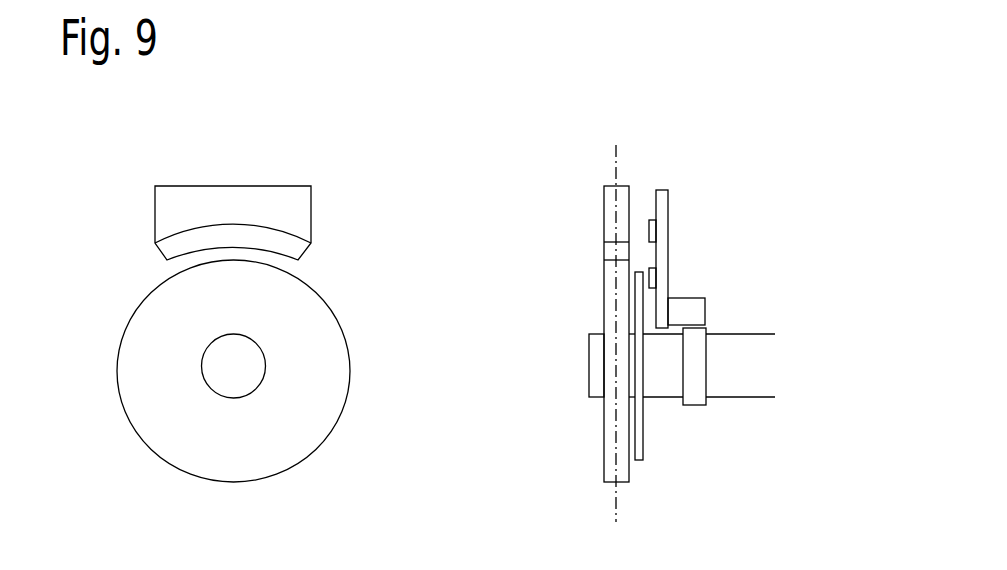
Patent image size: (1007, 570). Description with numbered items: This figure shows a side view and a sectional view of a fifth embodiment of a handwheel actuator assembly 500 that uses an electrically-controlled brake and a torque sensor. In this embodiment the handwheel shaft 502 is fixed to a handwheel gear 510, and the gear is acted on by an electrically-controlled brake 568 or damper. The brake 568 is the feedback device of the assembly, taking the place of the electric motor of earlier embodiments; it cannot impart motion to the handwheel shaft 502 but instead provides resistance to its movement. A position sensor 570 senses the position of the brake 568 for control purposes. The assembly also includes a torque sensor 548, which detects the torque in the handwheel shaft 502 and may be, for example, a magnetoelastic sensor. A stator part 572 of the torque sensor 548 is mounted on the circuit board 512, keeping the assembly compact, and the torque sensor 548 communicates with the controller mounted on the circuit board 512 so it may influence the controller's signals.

The handwheel actuator assembly 500 is at (116, 184).
The handwheel shaft 502 is at (232, 399).
The handwheel gear 510 is at (300, 462).
The circuit board 512 is at (668, 250).
The torque sensor 548 is at (728, 325).
The electrically-controlled brake 568 is at (260, 186).
The position sensor 570 is at (655, 232).
The stator part 572 is at (700, 298).